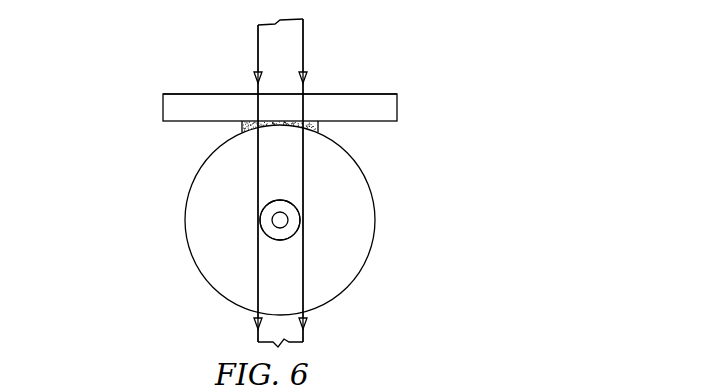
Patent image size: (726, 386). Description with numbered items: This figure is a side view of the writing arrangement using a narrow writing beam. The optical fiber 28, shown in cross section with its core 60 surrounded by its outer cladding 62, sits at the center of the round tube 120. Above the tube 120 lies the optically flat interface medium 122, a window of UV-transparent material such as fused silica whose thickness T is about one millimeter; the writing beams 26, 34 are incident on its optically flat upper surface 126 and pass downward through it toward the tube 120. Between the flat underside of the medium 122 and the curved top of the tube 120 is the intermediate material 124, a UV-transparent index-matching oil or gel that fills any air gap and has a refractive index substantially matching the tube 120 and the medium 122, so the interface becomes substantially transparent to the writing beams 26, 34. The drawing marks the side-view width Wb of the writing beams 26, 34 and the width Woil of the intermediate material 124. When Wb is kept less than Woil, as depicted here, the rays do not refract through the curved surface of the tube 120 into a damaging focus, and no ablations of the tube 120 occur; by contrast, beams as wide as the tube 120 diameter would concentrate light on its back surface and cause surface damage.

The writing beam 26 is at (257, 40).
The writing beam 34 is at (280, 180).
The optical fiber 28 is at (257, 203).
The core 60 is at (278, 220).
The outer cladding 62 is at (303, 223).
The tube 120 is at (182, 215).
The interface medium 122 is at (397, 108).
The intermediate material 124 is at (318, 128).
The upper surface 126 is at (383, 94).